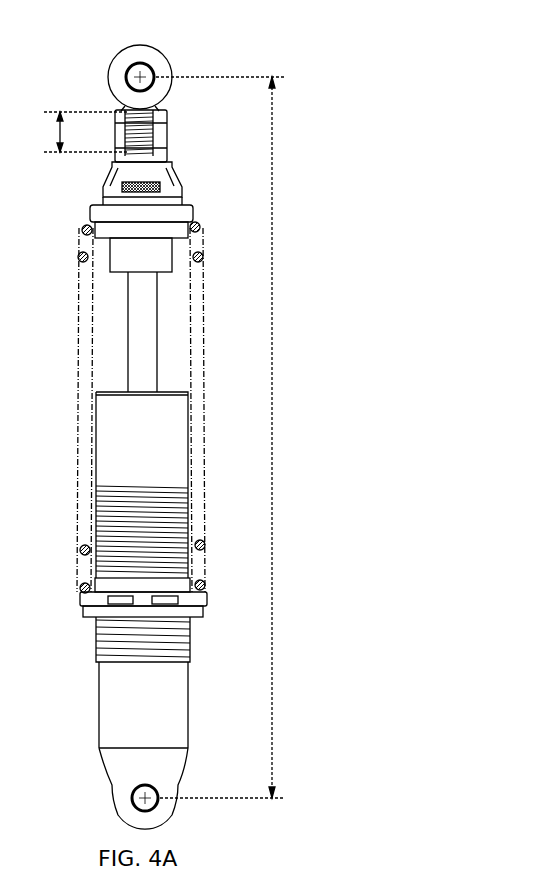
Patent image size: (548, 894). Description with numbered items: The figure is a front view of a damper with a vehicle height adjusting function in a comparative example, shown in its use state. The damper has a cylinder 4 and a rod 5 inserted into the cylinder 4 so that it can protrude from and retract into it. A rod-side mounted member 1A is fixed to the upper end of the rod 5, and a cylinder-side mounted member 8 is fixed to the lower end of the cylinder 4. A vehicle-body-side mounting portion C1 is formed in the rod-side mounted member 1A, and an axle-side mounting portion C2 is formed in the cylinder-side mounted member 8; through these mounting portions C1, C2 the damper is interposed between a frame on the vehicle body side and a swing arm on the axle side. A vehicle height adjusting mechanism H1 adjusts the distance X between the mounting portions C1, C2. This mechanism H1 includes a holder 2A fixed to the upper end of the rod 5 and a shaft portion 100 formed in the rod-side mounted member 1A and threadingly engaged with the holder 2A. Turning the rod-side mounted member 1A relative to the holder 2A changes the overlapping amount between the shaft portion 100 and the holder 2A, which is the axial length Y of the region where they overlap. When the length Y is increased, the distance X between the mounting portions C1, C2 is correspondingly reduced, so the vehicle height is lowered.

The rod-side mounted member 1A is at (104, 85).
The vehicle-body-side mounting portion C1 is at (126, 72).
The shaft portion 100 is at (168, 131).
The vehicle height adjusting mechanism H1 is at (173, 158).
The holder 2A is at (108, 170).
The rod 5 is at (128, 327).
The cylinder 4 is at (98, 465).
The cylinder-side mounted member 8 is at (112, 795).
The axle-side mounting portion C2 is at (145, 785).
The distance between mounting portions X is at (221, 437).
The axial length of overlapping region Y is at (83, 132).